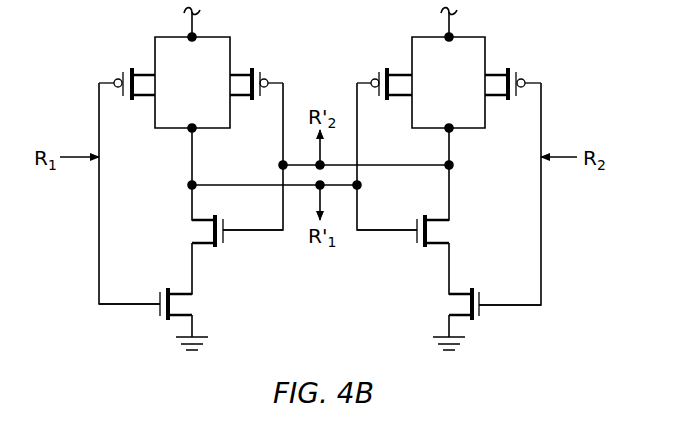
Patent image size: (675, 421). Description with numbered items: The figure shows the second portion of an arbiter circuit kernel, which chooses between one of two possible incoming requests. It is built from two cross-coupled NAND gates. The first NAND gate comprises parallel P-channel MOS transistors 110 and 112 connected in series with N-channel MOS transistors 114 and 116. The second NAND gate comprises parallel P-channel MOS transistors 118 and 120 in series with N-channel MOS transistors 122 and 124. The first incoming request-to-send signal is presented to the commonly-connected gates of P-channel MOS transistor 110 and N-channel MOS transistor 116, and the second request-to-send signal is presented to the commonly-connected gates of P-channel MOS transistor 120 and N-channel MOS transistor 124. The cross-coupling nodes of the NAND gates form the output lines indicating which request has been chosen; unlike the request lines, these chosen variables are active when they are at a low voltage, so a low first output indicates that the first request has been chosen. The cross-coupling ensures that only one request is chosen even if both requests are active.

The P-channel MOS transistor 110 is at (130, 68).
The P-channel MOS transistor 112 is at (256, 68).
The N-channel MOS transistor 114 is at (197, 230).
The N-channel MOS transistor 116 is at (185, 305).
The P-channel MOS transistor 118 is at (386, 66).
The P-channel MOS transistor 120 is at (511, 67).
The N-channel MOS transistor 122 is at (440, 230).
The N-channel MOS transistor 124 is at (453, 305).